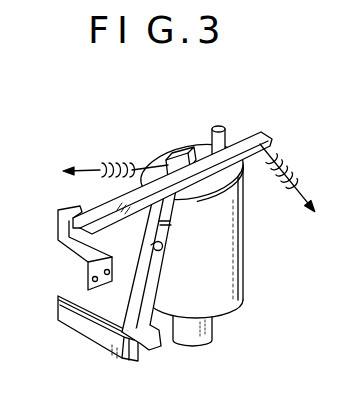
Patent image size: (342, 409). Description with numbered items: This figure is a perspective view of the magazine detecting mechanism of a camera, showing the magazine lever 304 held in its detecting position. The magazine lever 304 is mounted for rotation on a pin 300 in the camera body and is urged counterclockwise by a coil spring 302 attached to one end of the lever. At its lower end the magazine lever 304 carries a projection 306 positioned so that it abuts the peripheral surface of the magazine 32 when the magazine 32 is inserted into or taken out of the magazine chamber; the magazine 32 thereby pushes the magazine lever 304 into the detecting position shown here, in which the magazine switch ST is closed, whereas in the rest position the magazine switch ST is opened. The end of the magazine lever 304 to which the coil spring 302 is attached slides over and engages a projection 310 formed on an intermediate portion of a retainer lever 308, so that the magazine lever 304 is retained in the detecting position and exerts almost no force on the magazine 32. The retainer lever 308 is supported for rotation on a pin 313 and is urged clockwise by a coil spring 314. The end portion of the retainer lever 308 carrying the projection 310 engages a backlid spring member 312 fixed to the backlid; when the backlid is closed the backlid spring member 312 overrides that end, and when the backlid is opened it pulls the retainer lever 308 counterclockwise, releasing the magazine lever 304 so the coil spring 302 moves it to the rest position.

The magazine 32 is at (238, 270).
The pin 300 is at (163, 247).
The coil spring 302 is at (130, 165).
The magazine lever 304 is at (143, 298).
The projection 306 is at (150, 340).
The retainer lever 308 is at (110, 210).
The projection 310 is at (159, 158).
The backlid spring member 312 is at (85, 250).
The pin 313 is at (218, 125).
The coil spring 314 is at (288, 176).
The magazine switch ST is at (93, 340).